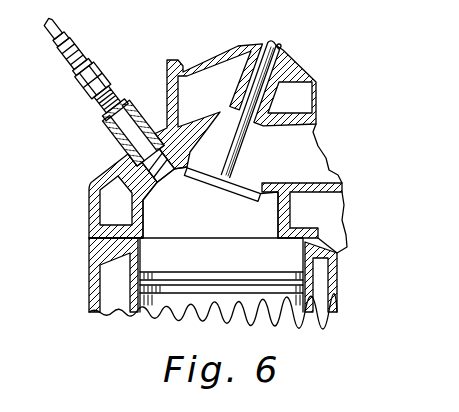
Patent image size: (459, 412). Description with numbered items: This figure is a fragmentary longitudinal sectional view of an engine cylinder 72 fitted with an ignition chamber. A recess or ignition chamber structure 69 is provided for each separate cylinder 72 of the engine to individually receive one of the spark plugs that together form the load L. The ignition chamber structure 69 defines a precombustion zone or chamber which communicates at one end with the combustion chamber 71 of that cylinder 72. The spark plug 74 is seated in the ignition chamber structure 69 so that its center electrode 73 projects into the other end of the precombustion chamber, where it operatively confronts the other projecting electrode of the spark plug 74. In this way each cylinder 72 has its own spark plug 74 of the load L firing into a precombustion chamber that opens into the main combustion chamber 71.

The load L is at (93, 50).
The spark plug 74 is at (117, 97).
The center electrode 73 is at (101, 119).
The ignition chamber structure 69 is at (120, 146).
The combustion chamber 71 is at (276, 211).
The cylinder 72 is at (141, 257).